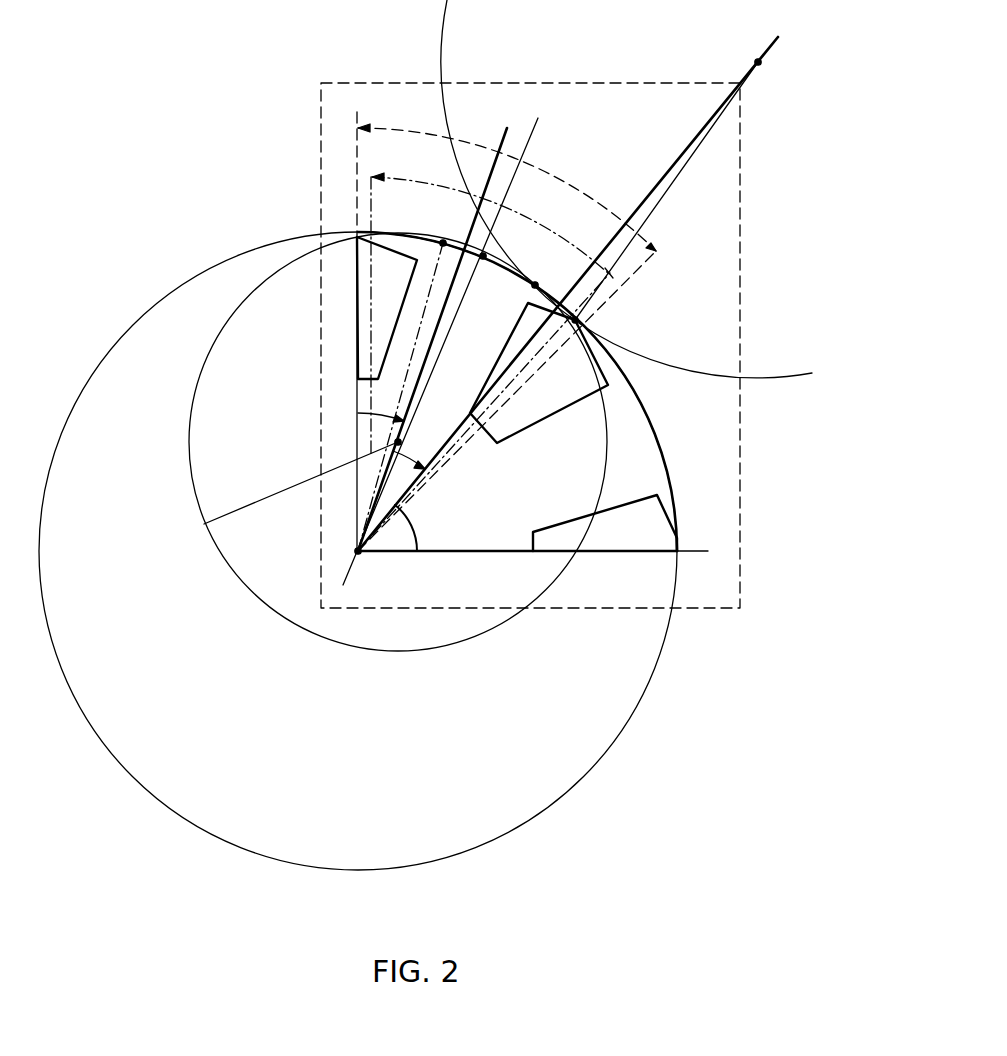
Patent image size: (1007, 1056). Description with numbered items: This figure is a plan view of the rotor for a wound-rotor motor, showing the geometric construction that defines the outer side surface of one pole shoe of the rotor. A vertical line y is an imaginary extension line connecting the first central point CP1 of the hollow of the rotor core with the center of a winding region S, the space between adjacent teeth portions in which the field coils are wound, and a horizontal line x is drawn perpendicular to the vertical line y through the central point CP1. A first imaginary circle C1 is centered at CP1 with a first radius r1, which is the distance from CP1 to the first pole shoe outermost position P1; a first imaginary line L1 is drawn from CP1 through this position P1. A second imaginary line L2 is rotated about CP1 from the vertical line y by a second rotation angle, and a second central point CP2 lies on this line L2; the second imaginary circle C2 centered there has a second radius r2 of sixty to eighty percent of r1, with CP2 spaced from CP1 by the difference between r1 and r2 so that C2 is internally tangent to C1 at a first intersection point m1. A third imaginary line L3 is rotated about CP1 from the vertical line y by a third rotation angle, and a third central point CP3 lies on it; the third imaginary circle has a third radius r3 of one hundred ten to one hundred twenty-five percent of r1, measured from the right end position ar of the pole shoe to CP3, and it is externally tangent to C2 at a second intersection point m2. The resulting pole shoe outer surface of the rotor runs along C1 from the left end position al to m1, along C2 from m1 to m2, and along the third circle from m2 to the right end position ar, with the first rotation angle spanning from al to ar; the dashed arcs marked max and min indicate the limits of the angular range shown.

The first central point CP1 is at (356, 551).
The second central point CP2 is at (398, 442).
The third central point CP3 is at (736, 52).
The first imaginary circle C1 is at (580, 784).
The second imaginary circle C2 is at (488, 630).
The first radius r1 is at (396, 391).
The second radius r2 is at (301, 483).
The third radius r3 is at (666, 191).
The first imaginary line L1 is at (447, 341).
The second imaginary line L2 is at (440, 324).
The third imaginary line L3 is at (578, 282).
The first intersection point m1 is at (438, 226).
The second intersection point m2 is at (552, 275).
The first pole shoe outermost position P1 is at (492, 272).
The right end position of the first pole shoe ar is at (578, 320).
The left end position of the first pole shoe al is at (370, 238).
The winding region S is at (558, 384).
The maximum position max is at (507, 187).
The minimum position min is at (490, 223).
The horizontal line x is at (542, 552).
The vertical line y is at (354, 320).
The element rotor is at (498, 493).